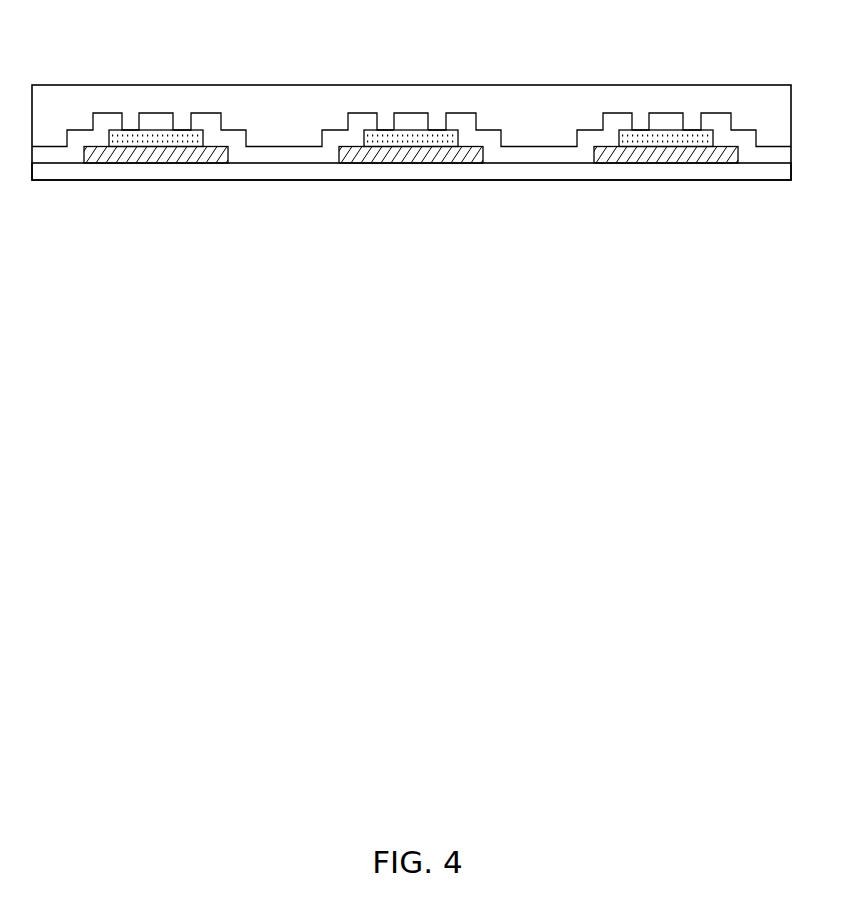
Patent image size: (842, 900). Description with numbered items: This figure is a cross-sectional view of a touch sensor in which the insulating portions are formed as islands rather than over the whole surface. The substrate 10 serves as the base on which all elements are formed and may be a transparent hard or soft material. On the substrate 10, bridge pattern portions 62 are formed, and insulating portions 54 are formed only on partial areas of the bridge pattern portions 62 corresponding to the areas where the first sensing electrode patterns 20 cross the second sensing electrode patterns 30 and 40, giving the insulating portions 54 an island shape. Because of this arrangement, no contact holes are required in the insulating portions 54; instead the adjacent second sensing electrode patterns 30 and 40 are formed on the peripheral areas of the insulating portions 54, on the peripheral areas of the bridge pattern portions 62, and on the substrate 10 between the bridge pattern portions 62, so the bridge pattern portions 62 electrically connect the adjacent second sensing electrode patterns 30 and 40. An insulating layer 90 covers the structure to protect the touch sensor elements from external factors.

The substrate 10 is at (757, 168).
The first sensing electrode pattern 20 is at (408, 122).
The second sensing electrode pattern 30 is at (333, 135).
The second sensing electrode pattern 40 is at (483, 137).
The insulating portion 54 is at (385, 136).
The bridge pattern portion 62 is at (442, 153).
The insulating layer 90 is at (757, 87).